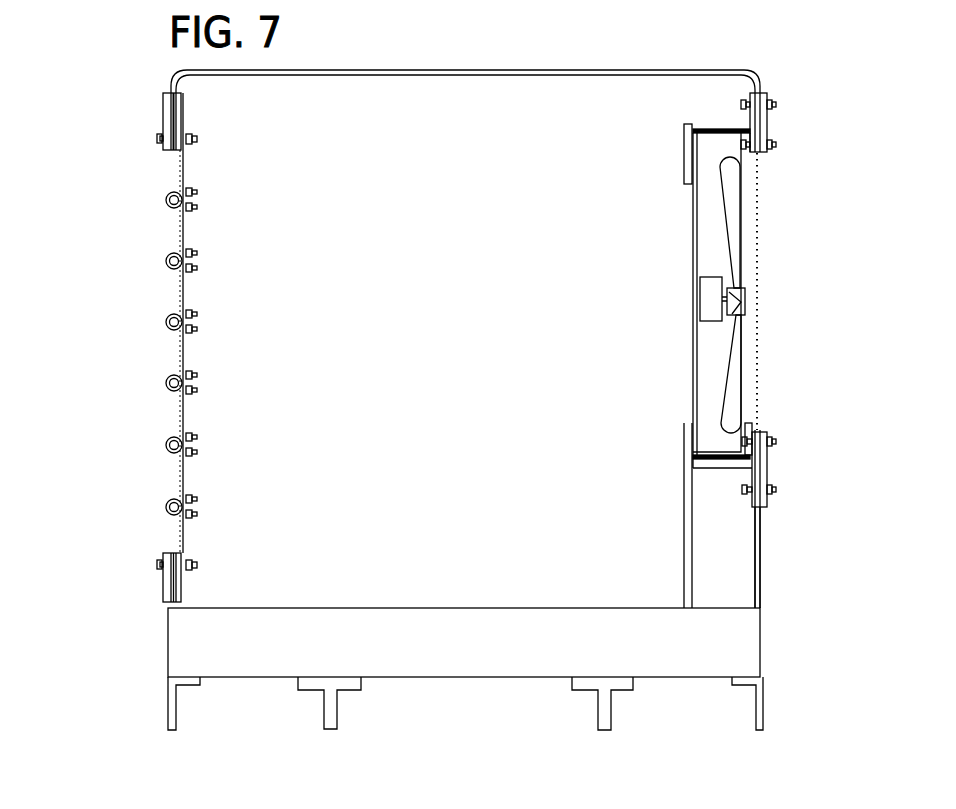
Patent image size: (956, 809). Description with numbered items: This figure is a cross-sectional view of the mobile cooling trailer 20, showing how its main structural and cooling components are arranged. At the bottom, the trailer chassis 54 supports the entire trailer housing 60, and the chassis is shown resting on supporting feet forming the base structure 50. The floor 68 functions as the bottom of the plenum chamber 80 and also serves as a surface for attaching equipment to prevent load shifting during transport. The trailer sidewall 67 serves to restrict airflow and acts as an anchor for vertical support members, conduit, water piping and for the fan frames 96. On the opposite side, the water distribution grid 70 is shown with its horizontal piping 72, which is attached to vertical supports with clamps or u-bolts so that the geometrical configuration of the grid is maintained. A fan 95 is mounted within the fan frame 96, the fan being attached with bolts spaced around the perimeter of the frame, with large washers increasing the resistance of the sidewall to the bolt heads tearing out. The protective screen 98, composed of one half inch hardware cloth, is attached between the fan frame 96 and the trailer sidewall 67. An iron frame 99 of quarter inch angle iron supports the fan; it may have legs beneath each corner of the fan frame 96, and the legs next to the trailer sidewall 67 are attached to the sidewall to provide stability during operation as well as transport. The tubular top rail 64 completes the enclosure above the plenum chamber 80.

The ventilation cabinet assembly 20 is at (411, 48).
The base support structure 50 is at (787, 655).
The trailer chassis 54 is at (605, 707).
The trailer housing 60 is at (142, 624).
The tubular frame 64 is at (437, 70).
The trailer sidewall 67 is at (762, 552).
The floor 68 is at (376, 650).
The water distribution grid 70 is at (131, 169).
The piping 72 is at (172, 197).
The plenum chamber 80 is at (557, 127).
The fan 95 is at (737, 297).
The fan frame 96 is at (720, 125).
The protective screen 98 is at (757, 359).
The iron frame 99 is at (720, 467).